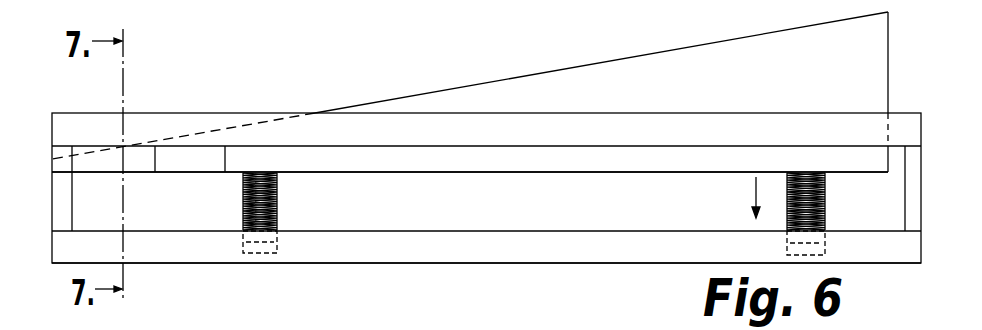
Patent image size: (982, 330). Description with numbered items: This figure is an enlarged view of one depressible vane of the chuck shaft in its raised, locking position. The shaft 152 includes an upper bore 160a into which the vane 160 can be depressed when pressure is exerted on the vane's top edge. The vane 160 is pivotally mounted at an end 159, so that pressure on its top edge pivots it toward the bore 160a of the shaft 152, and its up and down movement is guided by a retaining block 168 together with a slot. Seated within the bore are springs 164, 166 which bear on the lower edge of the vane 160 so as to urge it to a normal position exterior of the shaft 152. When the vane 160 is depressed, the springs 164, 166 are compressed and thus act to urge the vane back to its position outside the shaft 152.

The shaft 152 is at (661, 245).
The end 159 is at (72, 161).
The vane 160 is at (737, 36).
The upper bore 160a is at (562, 195).
The spring 164 is at (278, 205).
The spring 166 is at (826, 205).
The retaining block 168 is at (176, 148).